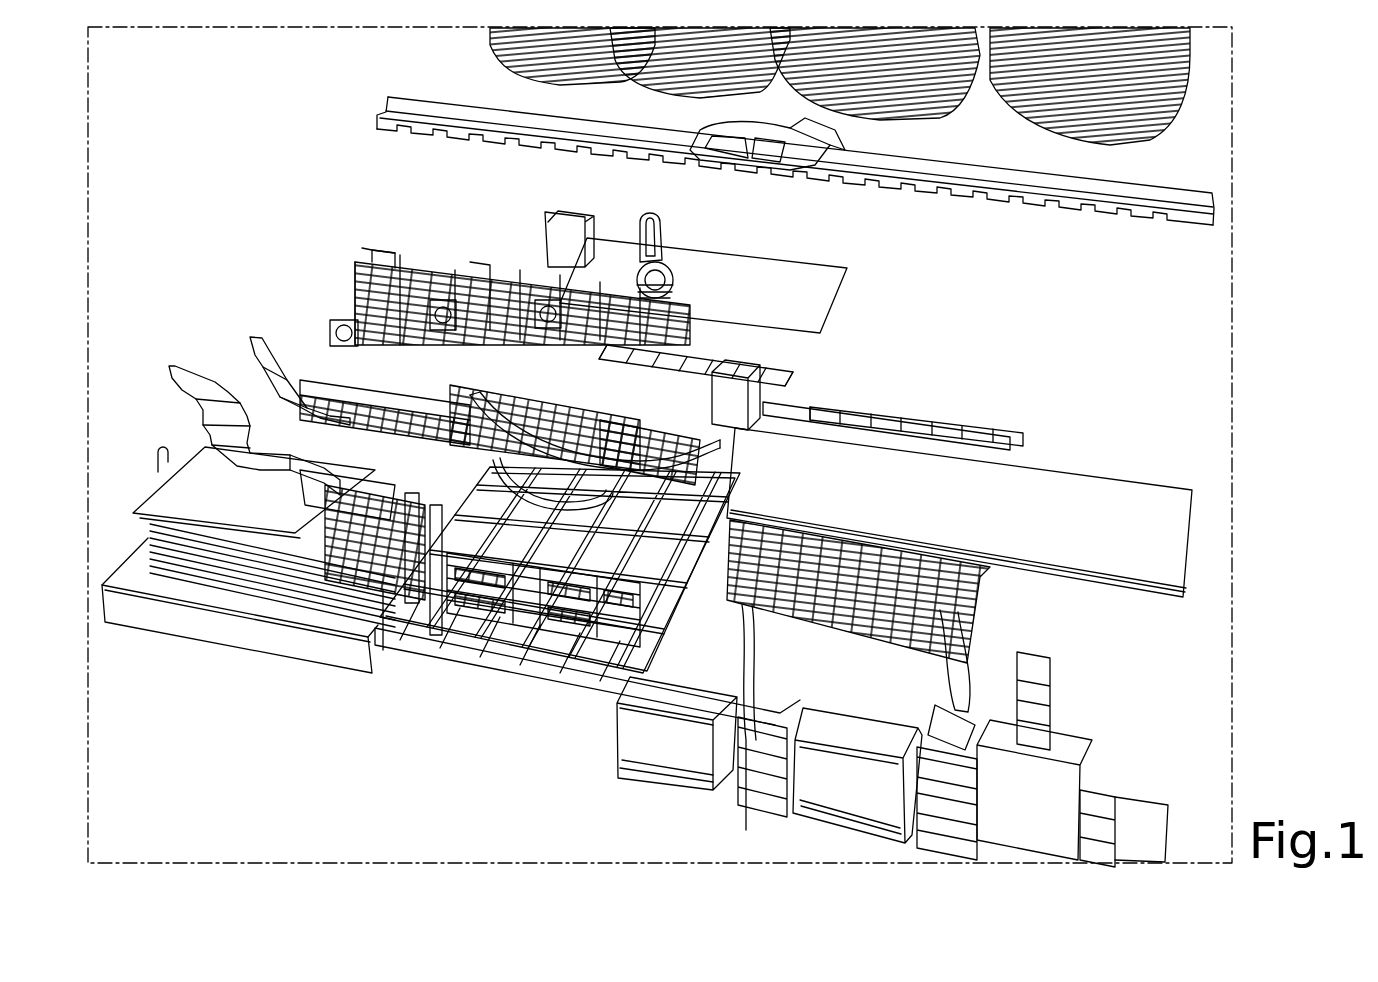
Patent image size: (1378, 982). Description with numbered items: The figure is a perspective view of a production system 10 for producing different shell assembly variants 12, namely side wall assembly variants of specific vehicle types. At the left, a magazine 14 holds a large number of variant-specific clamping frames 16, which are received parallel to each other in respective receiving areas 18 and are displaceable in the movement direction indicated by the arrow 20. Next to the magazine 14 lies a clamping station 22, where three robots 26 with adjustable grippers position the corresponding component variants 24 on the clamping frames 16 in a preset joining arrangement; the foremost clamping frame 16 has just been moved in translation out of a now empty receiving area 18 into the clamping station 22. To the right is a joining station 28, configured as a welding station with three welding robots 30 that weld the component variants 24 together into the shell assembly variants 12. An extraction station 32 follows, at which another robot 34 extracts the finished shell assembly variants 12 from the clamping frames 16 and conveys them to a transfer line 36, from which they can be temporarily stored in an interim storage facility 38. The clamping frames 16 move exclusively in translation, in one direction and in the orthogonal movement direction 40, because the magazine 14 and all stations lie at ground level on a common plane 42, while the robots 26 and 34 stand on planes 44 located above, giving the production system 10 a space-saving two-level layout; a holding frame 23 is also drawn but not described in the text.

The production system 10 is at (1203, 322).
The shell assembly variants 12 is at (525, 64).
The magazine 14 is at (205, 656).
The clamping frames 16 is at (416, 256).
The receiving areas 18 is at (158, 527).
The movement direction 20 is at (723, 347).
The clamping station 22 is at (553, 722).
The holding frame 23 is at (377, 270).
The component variants 24 is at (190, 387).
The robots 26 is at (323, 330).
The joining station 28 is at (1050, 598).
The welding robots 30 is at (820, 633).
The extraction station 32 is at (702, 345).
The robot 34 is at (668, 247).
The transfer line 36 is at (963, 177).
The interim storage facility 38 is at (874, 117).
The movement direction 40 is at (785, 333).
The plane 42 is at (1096, 325).
The planes 44 is at (817, 273).